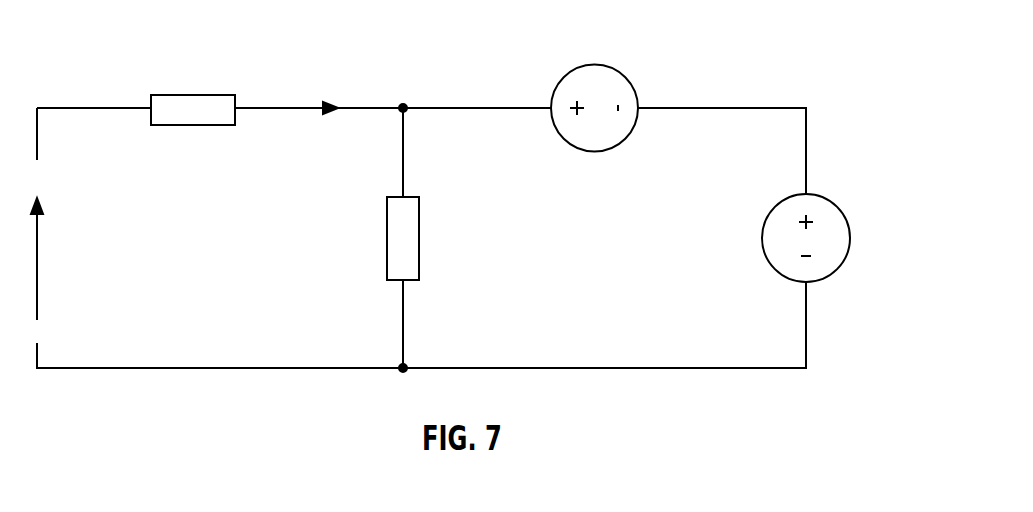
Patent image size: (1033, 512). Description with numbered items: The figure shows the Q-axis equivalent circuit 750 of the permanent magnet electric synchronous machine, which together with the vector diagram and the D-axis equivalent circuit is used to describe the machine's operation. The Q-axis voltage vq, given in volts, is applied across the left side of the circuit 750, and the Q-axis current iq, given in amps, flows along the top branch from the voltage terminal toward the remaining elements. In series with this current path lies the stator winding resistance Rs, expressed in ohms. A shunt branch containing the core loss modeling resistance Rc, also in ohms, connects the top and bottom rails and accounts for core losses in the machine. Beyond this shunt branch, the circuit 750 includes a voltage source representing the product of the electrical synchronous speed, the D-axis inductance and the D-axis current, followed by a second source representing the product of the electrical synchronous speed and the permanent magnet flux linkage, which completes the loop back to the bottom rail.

The Q-axis equivalent circuit 750 is at (461, 194).
The stator winding resistance Rs is at (193, 138).
The core loss modeling resistance Rc is at (433, 238).
The Q-axis current iq is at (326, 132).
The Q-axis voltage vq is at (53, 259).